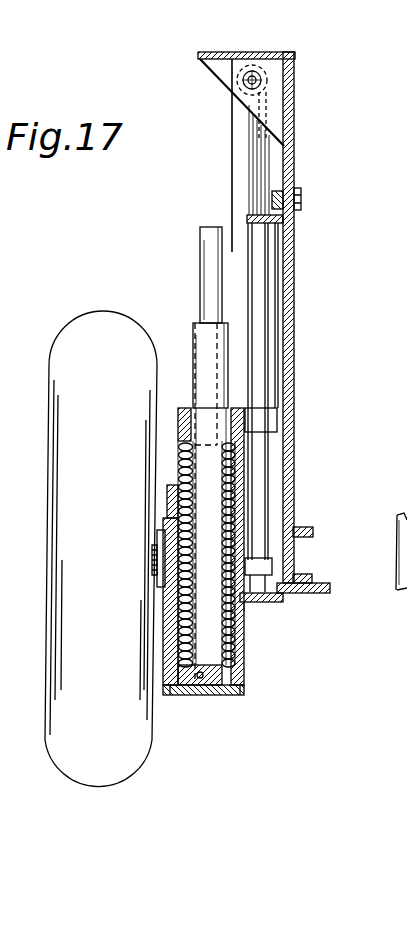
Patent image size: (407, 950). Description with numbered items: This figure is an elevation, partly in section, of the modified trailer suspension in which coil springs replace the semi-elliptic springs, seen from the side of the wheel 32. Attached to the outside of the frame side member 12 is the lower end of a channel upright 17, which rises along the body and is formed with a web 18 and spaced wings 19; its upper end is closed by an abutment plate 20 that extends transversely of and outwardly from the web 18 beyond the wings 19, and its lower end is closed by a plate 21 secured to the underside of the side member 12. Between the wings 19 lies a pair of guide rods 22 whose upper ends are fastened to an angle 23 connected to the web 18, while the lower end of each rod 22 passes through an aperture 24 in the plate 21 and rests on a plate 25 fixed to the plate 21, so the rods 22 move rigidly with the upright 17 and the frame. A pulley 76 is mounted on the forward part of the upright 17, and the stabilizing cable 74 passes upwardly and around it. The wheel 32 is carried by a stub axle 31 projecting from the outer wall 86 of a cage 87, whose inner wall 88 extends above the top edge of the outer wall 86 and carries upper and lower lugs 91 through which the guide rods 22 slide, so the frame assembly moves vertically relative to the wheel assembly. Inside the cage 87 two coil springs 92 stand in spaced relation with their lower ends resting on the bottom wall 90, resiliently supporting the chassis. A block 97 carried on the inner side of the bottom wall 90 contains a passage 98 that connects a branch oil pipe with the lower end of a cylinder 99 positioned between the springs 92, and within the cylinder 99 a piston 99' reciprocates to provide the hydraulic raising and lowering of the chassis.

The side member 12 is at (397, 513).
The channel upright 17 is at (300, 338).
The web 18 is at (290, 305).
The wings 19 is at (249, 167).
The abutment plate 20 is at (214, 42).
The plate 21 is at (327, 592).
The guide rods 22 is at (264, 283).
The angle 23 is at (284, 227).
The aperture 24 is at (272, 602).
The plate 25 is at (252, 602).
The stub axle 31 is at (158, 578).
The wheel 32 is at (48, 471).
The cable 74 is at (232, 140).
The pulley 76 is at (232, 97).
The outer wall 86 is at (168, 641).
The cage 87 is at (255, 662).
The inner wall 88 is at (246, 687).
The bottom wall 90 is at (241, 697).
The lugs 91 is at (278, 419).
The coil springs 92 is at (246, 487).
The block 97 is at (213, 697).
The passage 98 is at (188, 698).
The cylinder 99 is at (189, 497).
The piston 99' is at (186, 275).